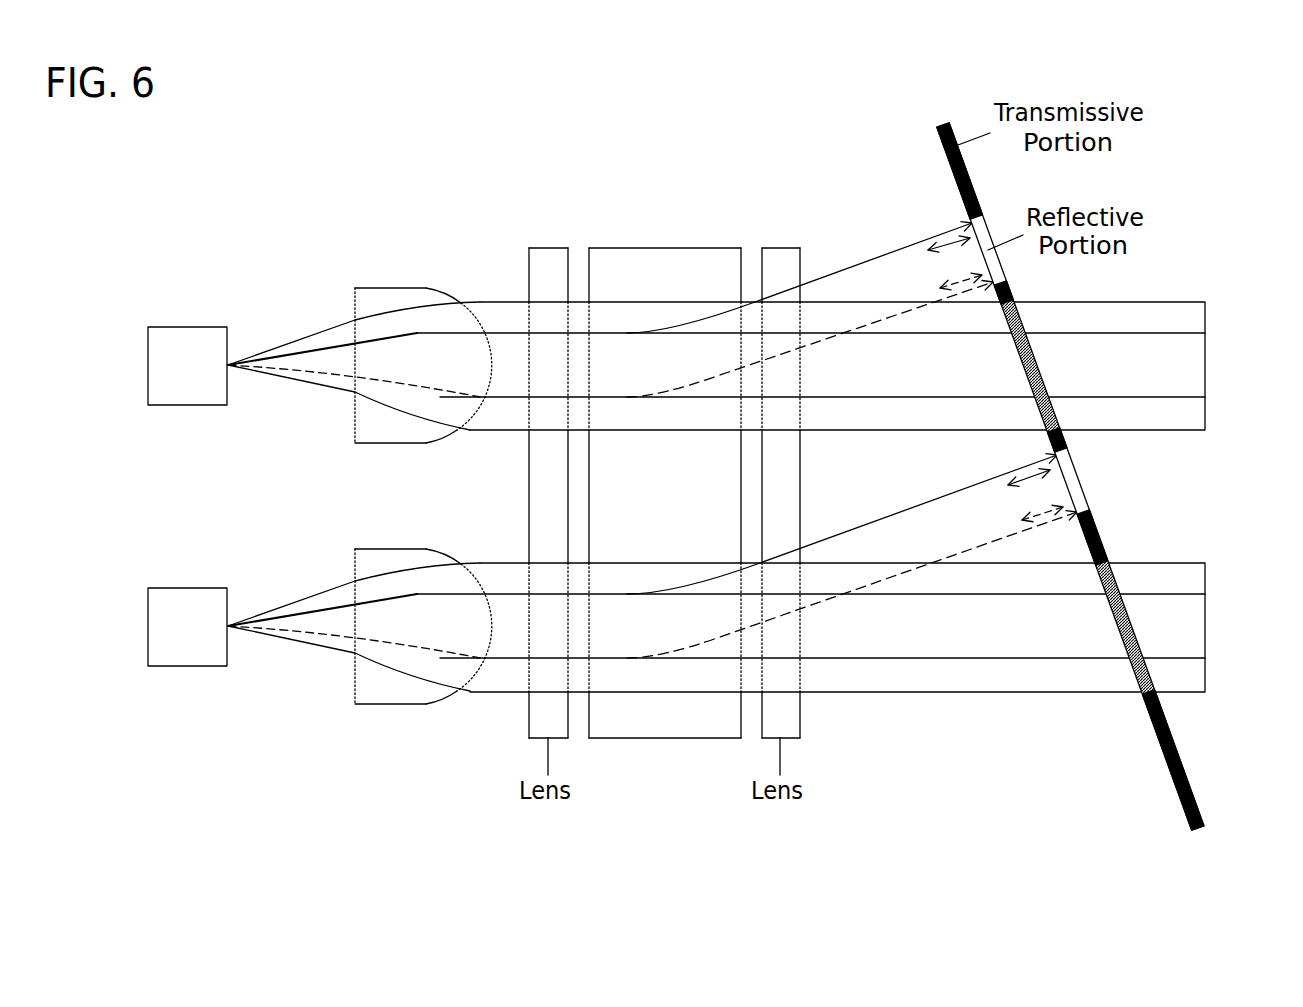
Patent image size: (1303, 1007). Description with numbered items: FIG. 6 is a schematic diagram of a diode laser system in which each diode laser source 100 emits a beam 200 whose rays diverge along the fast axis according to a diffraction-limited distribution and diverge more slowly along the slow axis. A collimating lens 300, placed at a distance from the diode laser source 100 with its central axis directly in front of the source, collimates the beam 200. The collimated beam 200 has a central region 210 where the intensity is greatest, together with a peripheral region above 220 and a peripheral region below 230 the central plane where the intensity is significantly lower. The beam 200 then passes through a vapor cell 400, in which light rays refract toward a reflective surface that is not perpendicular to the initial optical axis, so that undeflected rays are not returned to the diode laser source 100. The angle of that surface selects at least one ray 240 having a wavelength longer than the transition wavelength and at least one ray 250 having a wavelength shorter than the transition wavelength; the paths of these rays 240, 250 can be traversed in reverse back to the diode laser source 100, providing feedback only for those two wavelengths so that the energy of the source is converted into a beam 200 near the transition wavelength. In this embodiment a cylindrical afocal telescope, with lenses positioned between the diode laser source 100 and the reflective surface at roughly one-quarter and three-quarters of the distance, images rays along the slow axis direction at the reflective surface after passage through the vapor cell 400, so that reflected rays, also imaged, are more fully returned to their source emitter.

The diode laser source 100 is at (166, 379).
The beam 200 is at (277, 305).
The collimating lens 300 is at (402, 288).
The vapor cell 400 is at (642, 506).
The central region 210 is at (1187, 362).
The peripheral region above 220 is at (1167, 312).
The peripheral region below 230 is at (1167, 420).
The ray 240 is at (915, 245).
The ray 250 is at (917, 305).